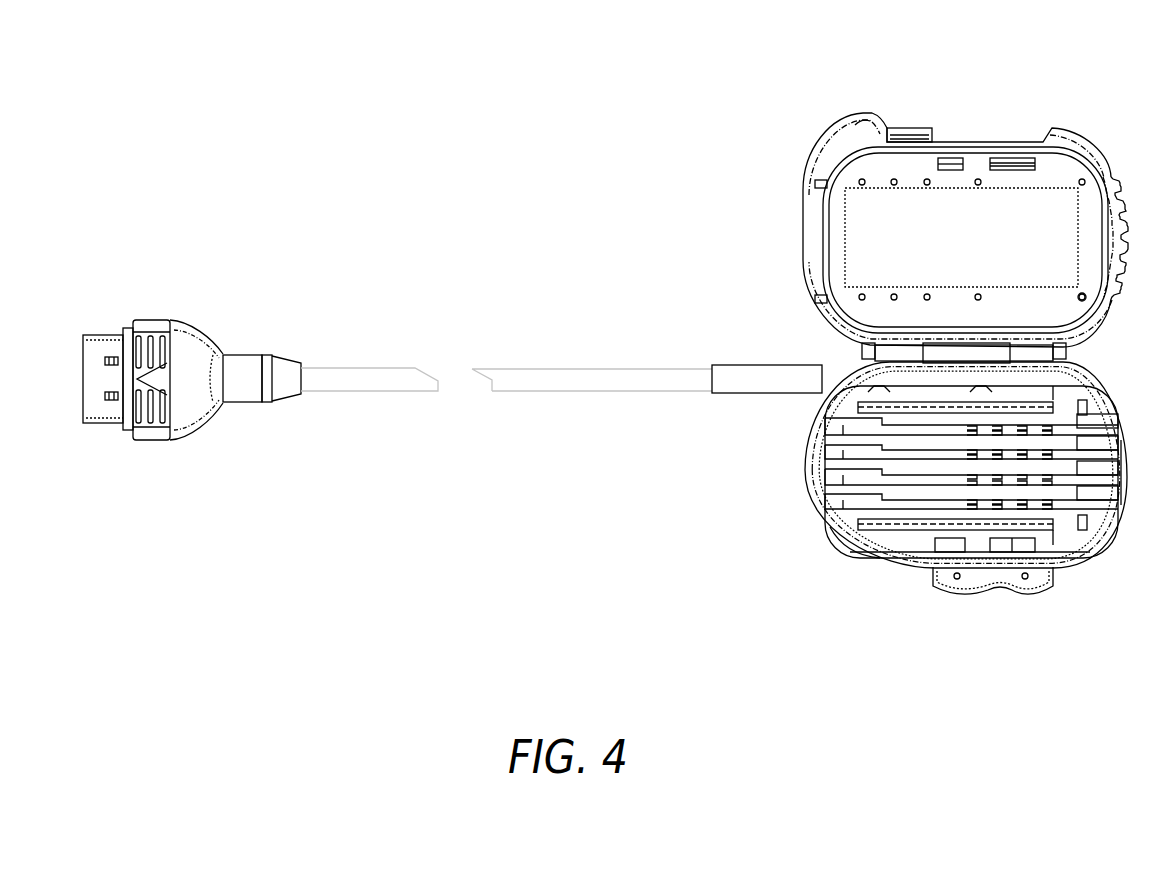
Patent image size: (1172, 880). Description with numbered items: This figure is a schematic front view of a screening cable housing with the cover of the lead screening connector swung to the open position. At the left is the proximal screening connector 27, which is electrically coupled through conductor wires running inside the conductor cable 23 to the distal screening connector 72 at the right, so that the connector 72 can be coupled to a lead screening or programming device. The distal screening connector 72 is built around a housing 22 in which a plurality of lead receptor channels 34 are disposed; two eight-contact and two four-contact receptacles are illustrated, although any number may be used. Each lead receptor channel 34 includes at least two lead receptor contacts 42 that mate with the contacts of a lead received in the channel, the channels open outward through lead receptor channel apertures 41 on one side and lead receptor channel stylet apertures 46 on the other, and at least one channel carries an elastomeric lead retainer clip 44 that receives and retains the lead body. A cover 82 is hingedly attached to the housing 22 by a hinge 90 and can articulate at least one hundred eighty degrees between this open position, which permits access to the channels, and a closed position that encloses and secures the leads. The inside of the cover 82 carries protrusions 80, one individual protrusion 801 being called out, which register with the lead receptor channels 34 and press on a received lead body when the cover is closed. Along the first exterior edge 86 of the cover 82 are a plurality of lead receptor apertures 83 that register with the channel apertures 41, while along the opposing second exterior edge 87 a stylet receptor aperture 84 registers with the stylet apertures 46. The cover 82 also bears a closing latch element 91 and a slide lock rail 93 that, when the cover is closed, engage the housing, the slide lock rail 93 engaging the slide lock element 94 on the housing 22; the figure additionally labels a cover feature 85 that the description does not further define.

The housing 22 is at (800, 470).
The conductor cable 23 is at (400, 357).
The proximal screening connector 27 is at (163, 312).
The lead receptor channel 34 is at (1056, 400).
The lead receptor channel aperture 41 is at (1105, 523).
The lead receptor contact 42 is at (862, 416).
The elastomeric lead retainer clip 44 is at (1083, 400).
The lead receptor channel stylet aperture 46 is at (810, 522).
The distal screening connector 72 is at (788, 340).
The protrusion 80 is at (896, 186).
The magnet 801 is at (1078, 297).
The cover 82 is at (1022, 127).
The lead receptor aperture 83 is at (1116, 181).
The stylet receptor aperture 84 is at (810, 180).
The lid tab 85 is at (863, 112).
The first exterior edge 86 is at (1090, 144).
The second exterior edge 87 is at (806, 226).
The hinge 90 is at (970, 352).
The closing latch element 91 is at (950, 158).
The slide lock rail 93 is at (903, 128).
The slide lock element 94 is at (998, 593).